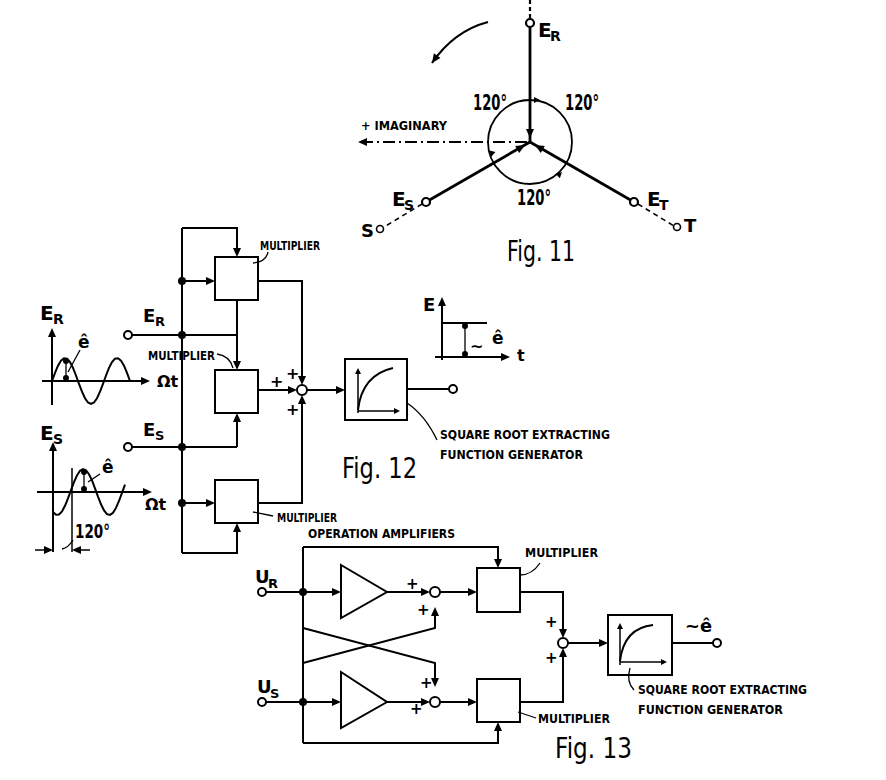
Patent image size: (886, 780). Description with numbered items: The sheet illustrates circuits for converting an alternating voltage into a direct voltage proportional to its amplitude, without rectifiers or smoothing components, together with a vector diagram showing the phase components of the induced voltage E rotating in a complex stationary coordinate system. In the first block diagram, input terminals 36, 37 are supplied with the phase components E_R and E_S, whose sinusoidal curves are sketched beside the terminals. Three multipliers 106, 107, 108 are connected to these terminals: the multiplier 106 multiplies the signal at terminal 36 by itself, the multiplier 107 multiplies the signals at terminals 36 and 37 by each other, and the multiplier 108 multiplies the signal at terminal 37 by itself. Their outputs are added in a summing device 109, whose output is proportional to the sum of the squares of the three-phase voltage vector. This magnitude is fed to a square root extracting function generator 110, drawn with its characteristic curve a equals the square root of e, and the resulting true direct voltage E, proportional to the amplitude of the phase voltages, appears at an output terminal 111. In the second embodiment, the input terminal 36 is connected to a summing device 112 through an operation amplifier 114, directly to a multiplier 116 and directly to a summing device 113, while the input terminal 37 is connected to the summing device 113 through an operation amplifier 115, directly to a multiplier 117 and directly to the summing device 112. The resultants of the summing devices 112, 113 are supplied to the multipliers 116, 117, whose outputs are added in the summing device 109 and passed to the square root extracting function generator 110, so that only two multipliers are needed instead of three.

In FIG. 12, the input terminal 36 is at (129, 321).
In FIG. 13, the input terminal 36 is at (258, 593).
In FIG. 12, the input terminal 37 is at (129, 434).
In FIG. 13, the input terminal 37 is at (258, 702).
In FIG. 12, the multiplier 106 is at (236, 294).
In FIG. 12, the multiplier 107 is at (215, 398).
In FIG. 12, the multiplier 108 is at (236, 488).
In FIG. 12, the summing device 109 is at (311, 381).
In FIG. 13, the summing device 109 is at (567, 640).
In FIG. 12, the square root extracting function generator 110 is at (372, 359).
In FIG. 13, the square root extracting function generator 110 is at (640, 615).
In FIG. 12, the output terminal 111 is at (445, 397).
In FIG. 13, the output terminal 111 is at (709, 643).
In FIG. 13, the summing device 112 is at (428, 576).
In FIG. 13, the summing device 113 is at (430, 717).
In FIG. 13, the operation amplifier 114 is at (380, 576).
In FIG. 13, the operation amplifier 115 is at (369, 712).
In FIG. 13, the multiplier 116 is at (498, 605).
In FIG. 13, the multiplier 117 is at (498, 686).